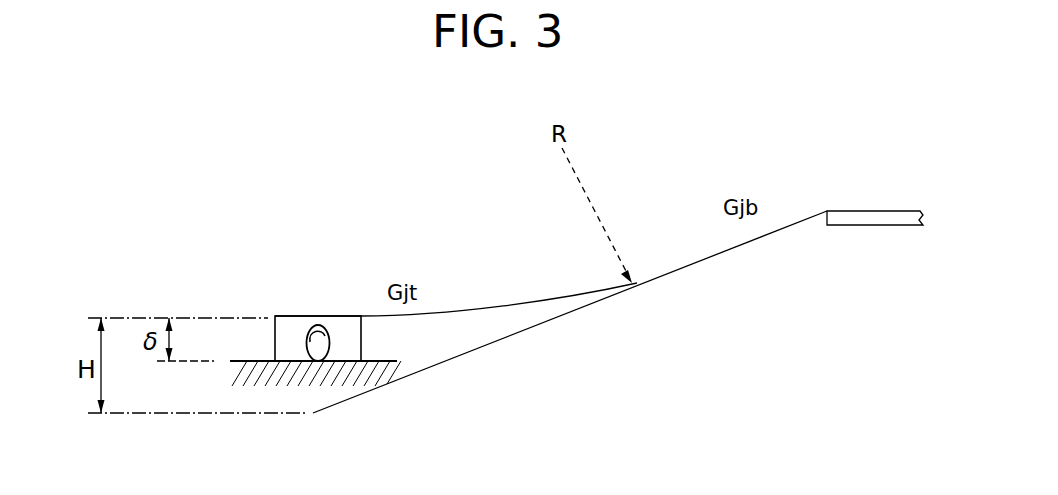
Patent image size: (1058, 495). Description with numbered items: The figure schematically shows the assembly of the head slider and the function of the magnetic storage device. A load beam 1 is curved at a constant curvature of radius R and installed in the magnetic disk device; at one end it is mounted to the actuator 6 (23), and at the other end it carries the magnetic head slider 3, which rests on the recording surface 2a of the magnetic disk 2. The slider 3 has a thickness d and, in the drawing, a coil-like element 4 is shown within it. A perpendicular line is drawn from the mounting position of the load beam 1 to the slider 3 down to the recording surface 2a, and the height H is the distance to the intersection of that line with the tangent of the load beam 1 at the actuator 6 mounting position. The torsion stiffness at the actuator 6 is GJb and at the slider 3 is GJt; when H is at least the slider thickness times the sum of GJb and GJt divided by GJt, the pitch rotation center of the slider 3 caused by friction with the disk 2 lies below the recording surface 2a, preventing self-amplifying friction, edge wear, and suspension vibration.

The load beam 1 is at (557, 298).
The magnetic disk 2 is at (367, 373).
The recording surface 2a is at (375, 360).
The magnetic head slider 3 is at (288, 333).
The coil 4 is at (321, 347).
The actuator 6 is at (875, 253).
The actuator 23 is at (873, 226).